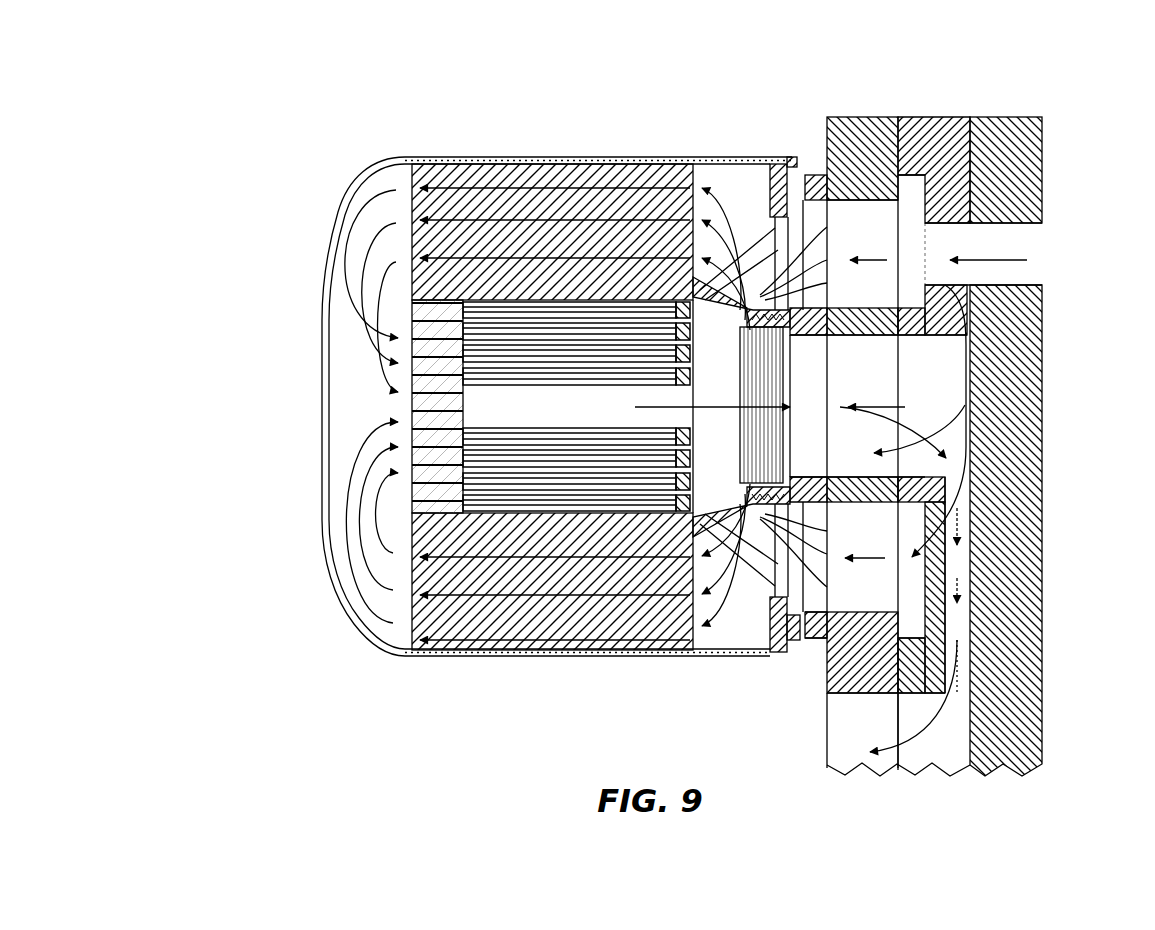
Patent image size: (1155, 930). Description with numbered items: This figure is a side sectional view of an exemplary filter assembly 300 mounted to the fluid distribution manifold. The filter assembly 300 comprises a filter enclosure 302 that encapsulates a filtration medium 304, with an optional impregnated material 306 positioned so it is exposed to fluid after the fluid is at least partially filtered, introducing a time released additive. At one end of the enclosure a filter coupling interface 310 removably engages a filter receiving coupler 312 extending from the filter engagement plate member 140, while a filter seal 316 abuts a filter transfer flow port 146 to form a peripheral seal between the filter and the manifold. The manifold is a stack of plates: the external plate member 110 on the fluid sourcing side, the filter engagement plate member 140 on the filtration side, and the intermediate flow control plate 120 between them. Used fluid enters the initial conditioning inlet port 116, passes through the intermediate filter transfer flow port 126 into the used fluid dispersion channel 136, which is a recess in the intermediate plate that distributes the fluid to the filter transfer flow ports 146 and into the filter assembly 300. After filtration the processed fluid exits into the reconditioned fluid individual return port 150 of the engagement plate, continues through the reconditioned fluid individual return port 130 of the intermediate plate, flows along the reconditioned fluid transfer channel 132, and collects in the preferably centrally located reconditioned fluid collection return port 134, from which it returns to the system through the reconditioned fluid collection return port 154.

The external plate member 110 is at (1005, 117).
The initial conditioning inlet port 116 is at (1027, 243).
The intermediate flow control plate 120 is at (935, 117).
The intermediate filter transfer flow port 126 is at (952, 238).
The reconditioned fluid individual return port 130 is at (1043, 298).
The reconditioned fluid transfer channel 132 is at (960, 570).
The reconditioned fluid collection return port 134 is at (938, 750).
The used fluid dispersion channel 136 is at (913, 200).
The filter engagement plate member 140 is at (863, 117).
The filter transfer flow port 146 is at (817, 172).
The reconditioned fluid individual return port 150 is at (915, 373).
The reconditioned fluid collection return port 154 is at (849, 750).
The filter assembly 300 is at (328, 122).
The filter enclosure 302 is at (322, 387).
The filtration medium 304 is at (482, 157).
The impregnated material 306 is at (413, 381).
The filter coupling interface 310 is at (758, 294).
The filter receiving coupler 312 is at (772, 343).
The filter seal 316 is at (785, 157).